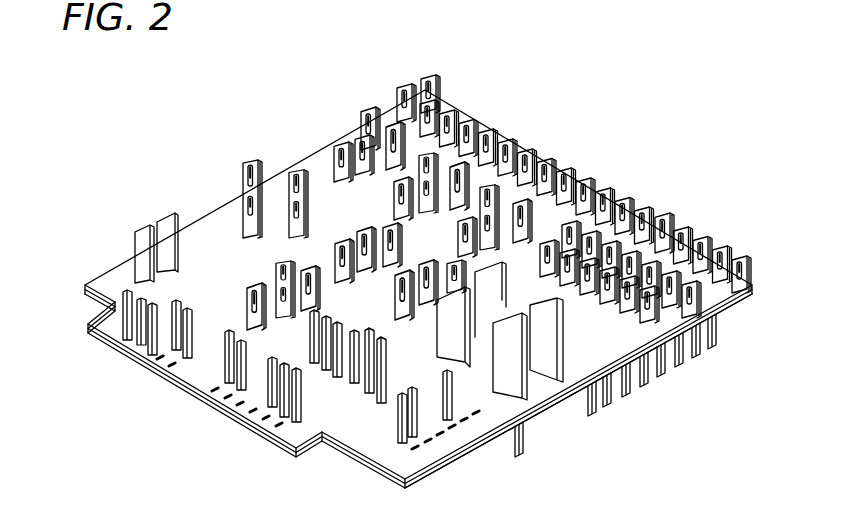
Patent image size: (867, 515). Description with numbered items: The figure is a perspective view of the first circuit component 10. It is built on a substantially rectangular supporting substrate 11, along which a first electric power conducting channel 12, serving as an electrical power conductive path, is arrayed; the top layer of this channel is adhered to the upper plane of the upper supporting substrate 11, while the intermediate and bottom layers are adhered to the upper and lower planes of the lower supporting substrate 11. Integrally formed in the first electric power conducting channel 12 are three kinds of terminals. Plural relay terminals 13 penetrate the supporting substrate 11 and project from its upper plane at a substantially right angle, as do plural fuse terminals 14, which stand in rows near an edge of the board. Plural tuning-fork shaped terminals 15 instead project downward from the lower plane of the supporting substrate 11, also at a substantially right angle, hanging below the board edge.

The first circuit component 10 is at (596, 114).
The supporting substrate 11 is at (199, 250).
The first electric power conducting channel 12 is at (607, 424).
The relay terminals 13 is at (246, 162).
The fuse terminals 14 is at (664, 218).
The tuning-fork shaped terminals 15 is at (667, 373).